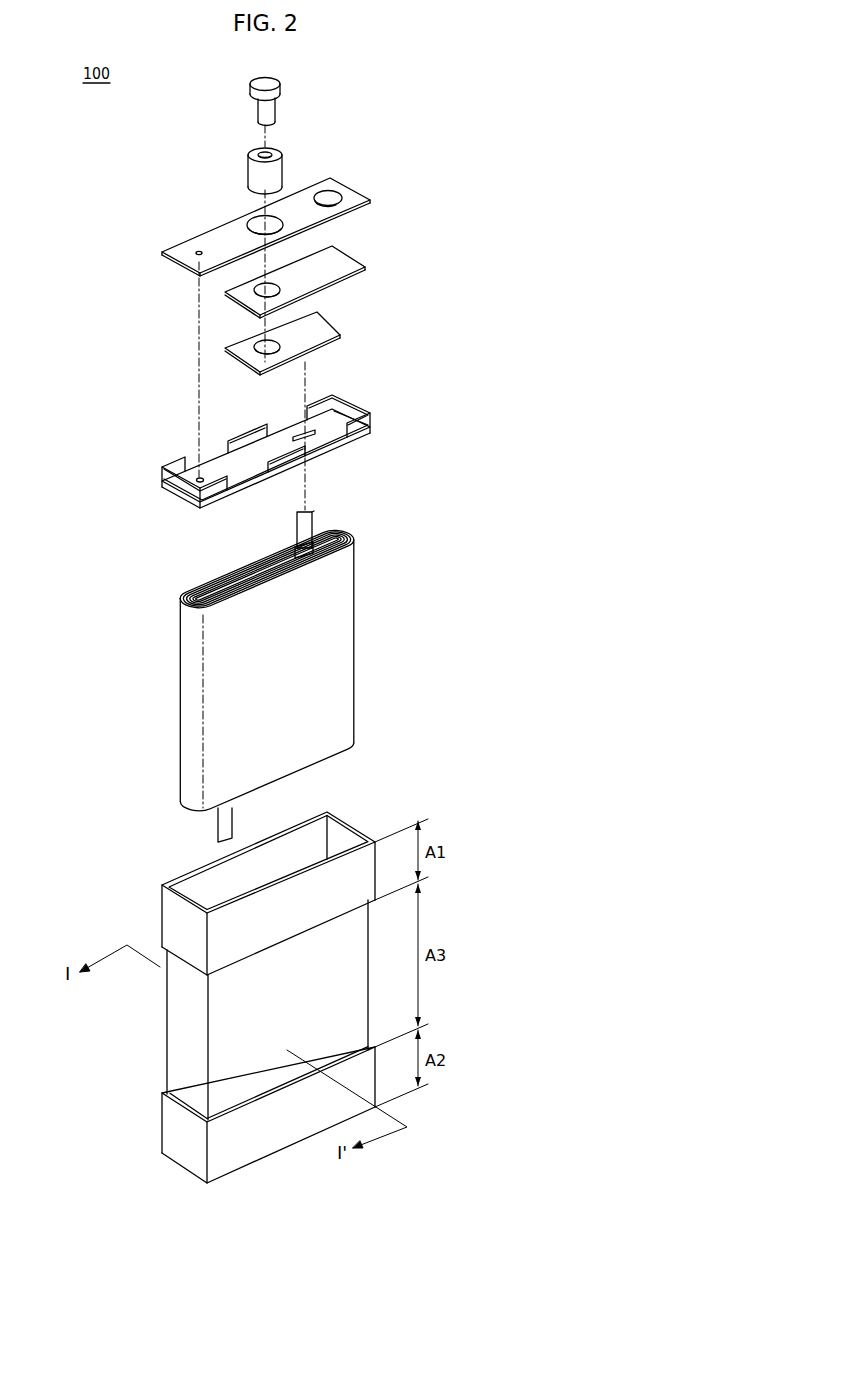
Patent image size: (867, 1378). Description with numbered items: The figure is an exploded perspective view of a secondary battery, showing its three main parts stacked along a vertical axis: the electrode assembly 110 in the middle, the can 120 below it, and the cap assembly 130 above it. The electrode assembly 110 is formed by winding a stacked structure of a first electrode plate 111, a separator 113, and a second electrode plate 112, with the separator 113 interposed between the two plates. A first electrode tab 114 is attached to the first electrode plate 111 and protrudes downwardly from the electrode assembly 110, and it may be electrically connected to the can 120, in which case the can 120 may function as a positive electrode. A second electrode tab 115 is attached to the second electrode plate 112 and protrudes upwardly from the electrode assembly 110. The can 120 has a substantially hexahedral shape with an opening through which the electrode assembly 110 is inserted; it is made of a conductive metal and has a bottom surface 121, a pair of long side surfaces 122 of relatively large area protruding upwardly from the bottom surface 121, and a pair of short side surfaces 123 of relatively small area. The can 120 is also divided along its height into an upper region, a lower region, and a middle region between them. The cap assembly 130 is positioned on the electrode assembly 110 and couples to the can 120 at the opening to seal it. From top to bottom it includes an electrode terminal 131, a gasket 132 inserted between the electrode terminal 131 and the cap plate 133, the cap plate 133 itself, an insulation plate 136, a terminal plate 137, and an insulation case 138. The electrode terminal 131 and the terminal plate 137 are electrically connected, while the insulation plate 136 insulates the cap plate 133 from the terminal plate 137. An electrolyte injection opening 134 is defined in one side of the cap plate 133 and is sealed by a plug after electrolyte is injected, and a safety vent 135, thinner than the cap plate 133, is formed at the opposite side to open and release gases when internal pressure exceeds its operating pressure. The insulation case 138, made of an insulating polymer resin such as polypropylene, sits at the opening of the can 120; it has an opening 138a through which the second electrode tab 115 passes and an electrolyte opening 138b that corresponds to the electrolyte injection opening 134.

The electrode assembly 110 is at (410, 506).
The first electrode plate 111 is at (352, 535).
The second electrode plate 112 is at (333, 531).
The separator 113 is at (348, 532).
The first electrode tab 114 is at (233, 825).
The second electrode tab 115 is at (303, 528).
The can 120 is at (146, 893).
The bottom surface 121 is at (240, 1175).
The long side surfaces 122 is at (238, 1068).
The short side surfaces 123 is at (178, 997).
The cap assembly 130 is at (413, 103).
The electrode terminal 131 is at (282, 87).
The gasket 132 is at (283, 150).
The cap plate 133 is at (345, 188).
The electrolyte injection opening 134 is at (198, 250).
The safety vent 135 is at (320, 203).
The insulation plate 136 is at (345, 257).
The terminal plate 137 is at (320, 320).
The insulation case 138 is at (340, 412).
The opening 138a is at (302, 430).
The electrolyte opening 138b is at (198, 480).